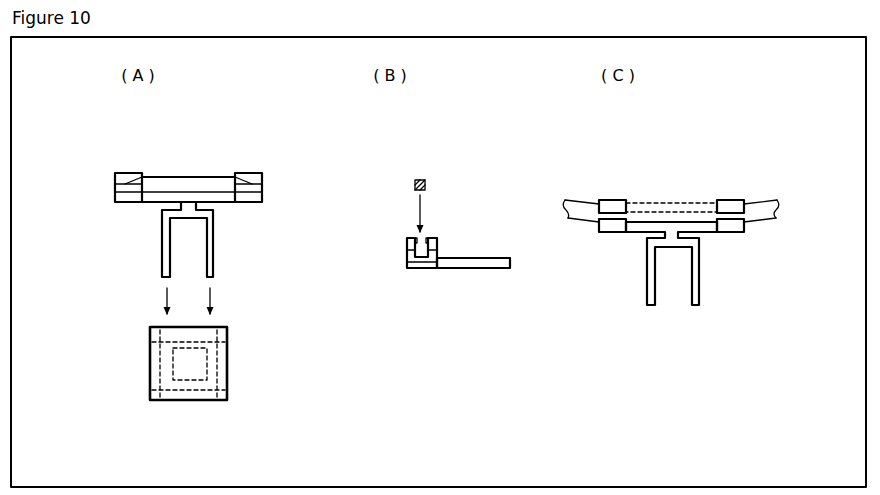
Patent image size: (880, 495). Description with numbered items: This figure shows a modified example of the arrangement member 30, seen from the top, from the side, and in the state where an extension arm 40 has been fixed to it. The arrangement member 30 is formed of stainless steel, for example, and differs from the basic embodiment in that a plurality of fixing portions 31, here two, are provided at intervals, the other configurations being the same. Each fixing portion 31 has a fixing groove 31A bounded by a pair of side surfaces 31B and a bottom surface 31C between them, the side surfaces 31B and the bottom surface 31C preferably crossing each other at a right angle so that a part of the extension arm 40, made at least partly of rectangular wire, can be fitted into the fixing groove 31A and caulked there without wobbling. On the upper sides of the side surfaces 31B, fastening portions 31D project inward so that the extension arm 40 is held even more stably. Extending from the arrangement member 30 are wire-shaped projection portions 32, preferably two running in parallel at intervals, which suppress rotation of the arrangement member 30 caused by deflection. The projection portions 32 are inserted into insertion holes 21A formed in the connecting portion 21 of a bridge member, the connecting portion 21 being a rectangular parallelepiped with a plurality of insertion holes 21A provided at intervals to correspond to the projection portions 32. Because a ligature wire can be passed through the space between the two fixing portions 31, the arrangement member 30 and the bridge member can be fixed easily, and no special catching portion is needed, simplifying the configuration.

The connecting portion 21 is at (228, 357).
The insertion hole 21A is at (150, 388).
The arrangement member 30 is at (240, 134).
The fixing portion 31 is at (113, 172).
The fixing groove 31A is at (232, 177).
The side surfaces 31B is at (408, 250).
The bottom surface 31C is at (408, 263).
The fastening portions 31D is at (406, 238).
The projection portion 32 is at (170, 245).
The extension arm 40 is at (419, 178).